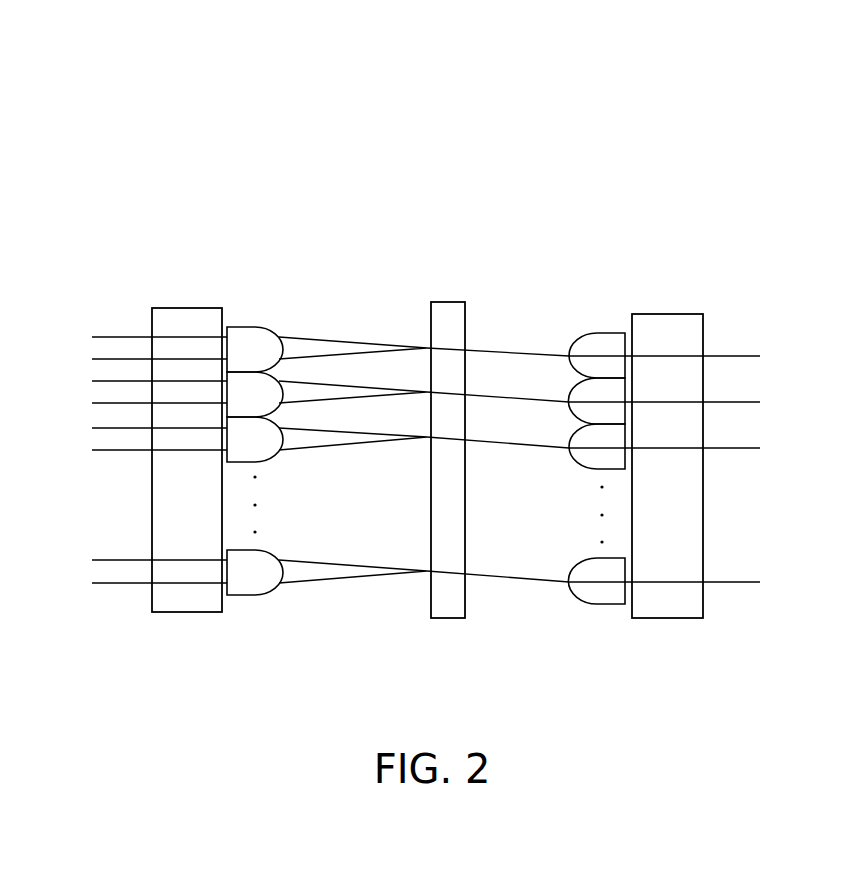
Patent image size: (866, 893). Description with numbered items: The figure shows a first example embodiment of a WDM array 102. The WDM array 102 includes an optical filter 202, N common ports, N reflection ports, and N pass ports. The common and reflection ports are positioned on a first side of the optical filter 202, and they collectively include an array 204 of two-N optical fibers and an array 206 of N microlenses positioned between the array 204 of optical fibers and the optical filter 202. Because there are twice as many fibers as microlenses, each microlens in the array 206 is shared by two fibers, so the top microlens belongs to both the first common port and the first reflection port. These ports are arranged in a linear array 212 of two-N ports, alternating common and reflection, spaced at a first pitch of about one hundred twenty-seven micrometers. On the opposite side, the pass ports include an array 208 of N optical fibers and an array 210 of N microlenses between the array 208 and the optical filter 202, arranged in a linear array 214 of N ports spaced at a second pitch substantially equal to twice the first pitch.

The WDM array 102 is at (736, 67).
The optical filter 202 is at (448, 301).
The array of 2N optical fibers 204 is at (193, 292).
The array of N microlenses 206 is at (263, 292).
The array of N optical fibers 208 is at (665, 294).
The array of N microlenses 210 is at (593, 294).
The linear array of 2N ports 212 is at (313, 200).
The linear array of N ports 214 is at (543, 202).